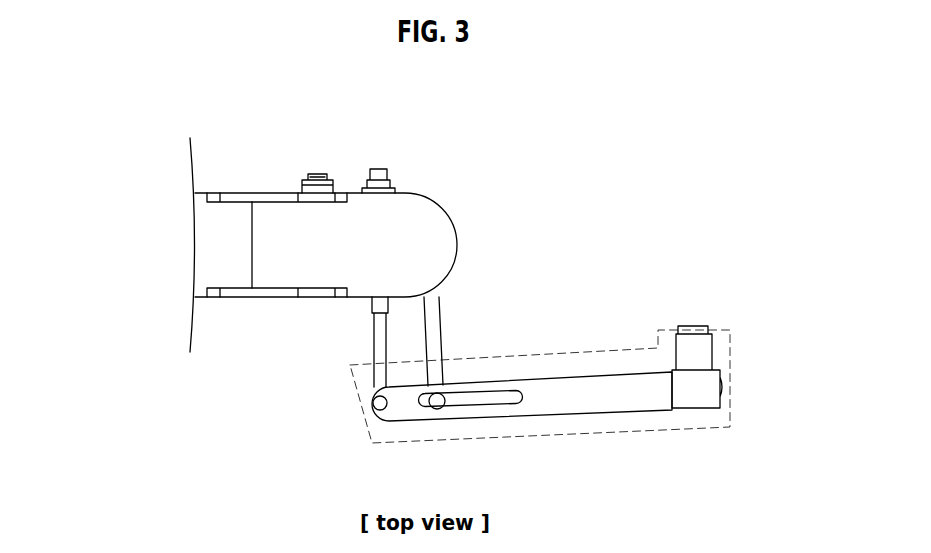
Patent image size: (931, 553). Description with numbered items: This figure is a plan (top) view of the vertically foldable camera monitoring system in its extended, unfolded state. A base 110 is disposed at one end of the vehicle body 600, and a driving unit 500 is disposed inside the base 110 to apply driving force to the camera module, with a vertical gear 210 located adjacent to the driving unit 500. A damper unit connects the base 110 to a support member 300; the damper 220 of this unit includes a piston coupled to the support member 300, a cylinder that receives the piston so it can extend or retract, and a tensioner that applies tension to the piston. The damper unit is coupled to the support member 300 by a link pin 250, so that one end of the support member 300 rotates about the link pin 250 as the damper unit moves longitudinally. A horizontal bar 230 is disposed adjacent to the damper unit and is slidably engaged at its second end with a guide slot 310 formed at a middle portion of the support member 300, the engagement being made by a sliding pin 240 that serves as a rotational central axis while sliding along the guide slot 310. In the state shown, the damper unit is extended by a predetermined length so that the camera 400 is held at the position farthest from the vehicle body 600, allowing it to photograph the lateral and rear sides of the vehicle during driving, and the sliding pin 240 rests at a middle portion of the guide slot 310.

The base 110 is at (232, 225).
The vertical gear 210 is at (385, 173).
The damper 220 is at (377, 342).
The horizontal bar 230 is at (432, 310).
The sliding pin 240 is at (436, 409).
The link pin 250 is at (377, 403).
The support member 300 is at (582, 390).
The guide slot 310 is at (477, 393).
The camera 400 is at (697, 327).
The driving unit 500 is at (317, 173).
The vehicle body 600 is at (195, 248).